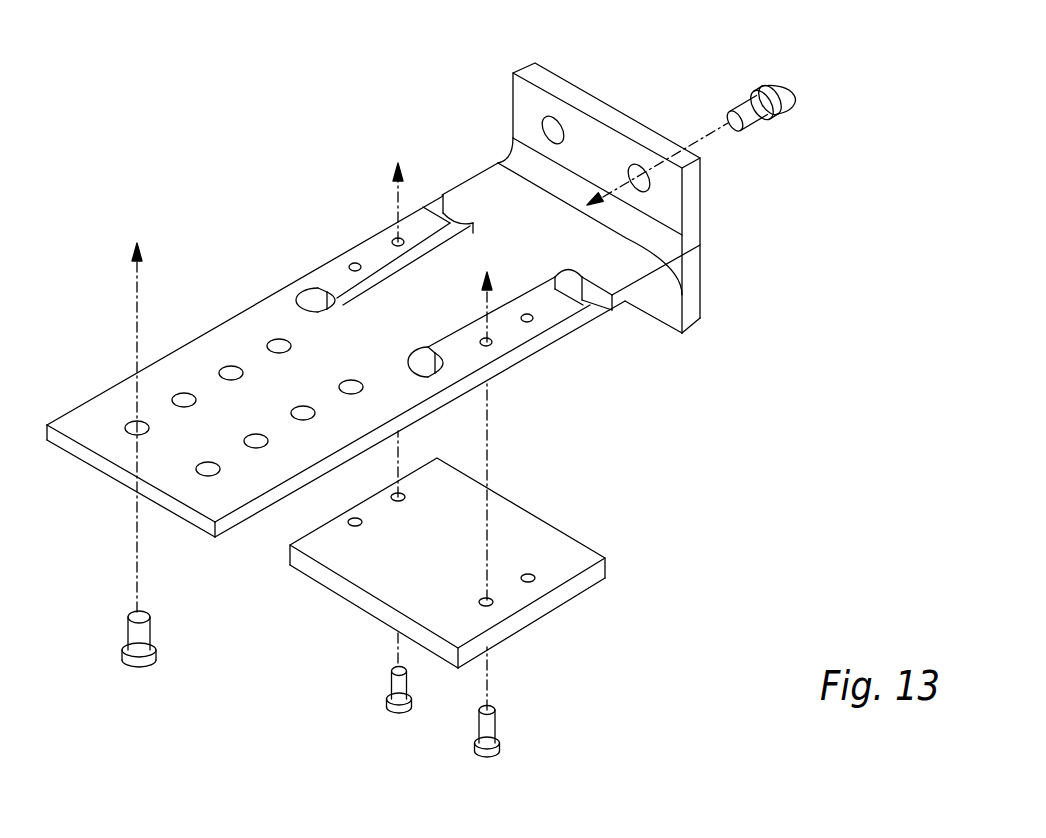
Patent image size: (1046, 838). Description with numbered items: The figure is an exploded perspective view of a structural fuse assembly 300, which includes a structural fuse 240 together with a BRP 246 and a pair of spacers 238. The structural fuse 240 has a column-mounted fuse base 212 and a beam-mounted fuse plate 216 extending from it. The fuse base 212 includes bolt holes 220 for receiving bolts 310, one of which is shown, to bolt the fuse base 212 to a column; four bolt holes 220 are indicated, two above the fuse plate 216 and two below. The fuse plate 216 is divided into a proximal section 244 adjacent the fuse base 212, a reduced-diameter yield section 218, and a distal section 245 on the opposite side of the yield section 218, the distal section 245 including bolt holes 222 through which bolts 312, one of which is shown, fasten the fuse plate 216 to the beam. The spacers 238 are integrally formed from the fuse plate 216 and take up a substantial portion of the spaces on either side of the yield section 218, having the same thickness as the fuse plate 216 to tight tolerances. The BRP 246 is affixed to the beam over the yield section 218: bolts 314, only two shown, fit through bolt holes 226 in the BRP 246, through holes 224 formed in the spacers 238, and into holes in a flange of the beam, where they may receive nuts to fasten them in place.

The structural fuse 240 is at (316, 102).
The fuse base 212 is at (528, 63).
The bolt holes 220 is at (566, 138).
The bolts 310 is at (762, 118).
The fuse plate 216 is at (493, 187).
The proximal section 244 is at (566, 236).
The spacers 238 is at (370, 244).
The holes 224 is at (350, 266).
The bolt holes 222 is at (231, 366).
The yield section 218 is at (457, 311).
The distal section 245 is at (243, 430).
The bolt holes 226 is at (350, 521).
The BRP 246 is at (568, 560).
The structural fuse assembly 300 is at (760, 443).
The bolts 312 is at (129, 648).
The bolts 314 is at (391, 681).